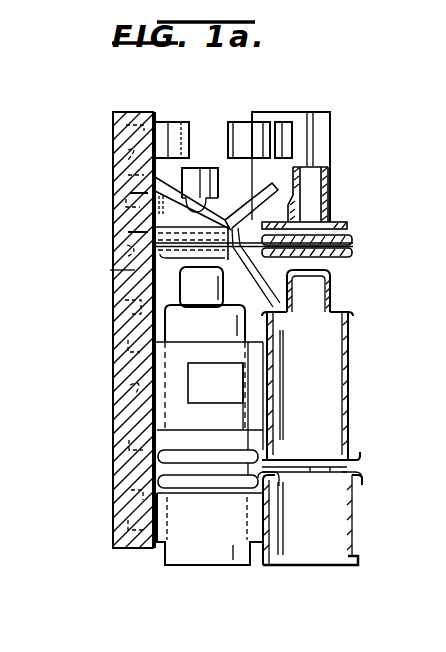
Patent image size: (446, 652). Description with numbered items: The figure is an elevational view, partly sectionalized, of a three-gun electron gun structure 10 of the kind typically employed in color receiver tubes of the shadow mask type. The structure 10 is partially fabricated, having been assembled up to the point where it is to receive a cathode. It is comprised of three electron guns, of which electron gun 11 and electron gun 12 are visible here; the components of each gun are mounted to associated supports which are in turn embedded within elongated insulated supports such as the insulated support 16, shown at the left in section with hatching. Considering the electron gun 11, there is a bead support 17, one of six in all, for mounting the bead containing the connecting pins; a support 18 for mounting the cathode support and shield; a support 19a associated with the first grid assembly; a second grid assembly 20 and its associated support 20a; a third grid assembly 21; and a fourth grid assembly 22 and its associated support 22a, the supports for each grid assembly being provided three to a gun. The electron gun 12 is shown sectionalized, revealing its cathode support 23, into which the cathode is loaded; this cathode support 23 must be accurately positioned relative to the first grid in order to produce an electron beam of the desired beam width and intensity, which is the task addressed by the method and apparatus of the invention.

The structure 10 is at (57, 107).
The electron gun 11 is at (200, 130).
The electron gun 12 is at (326, 74).
The elongated insulated support 16 is at (133, 111).
The bead support 17 is at (159, 122).
The support 18 is at (128, 193).
The first grid assembly support 19a is at (126, 232).
The second grid assembly 20 is at (133, 250).
The second grid assembly support 20a is at (110, 271).
The third grid assembly 21 is at (148, 323).
The fourth grid assembly 22 is at (134, 484).
The fourth grid assembly support 22a is at (133, 518).
The cathode support 23 is at (330, 200).